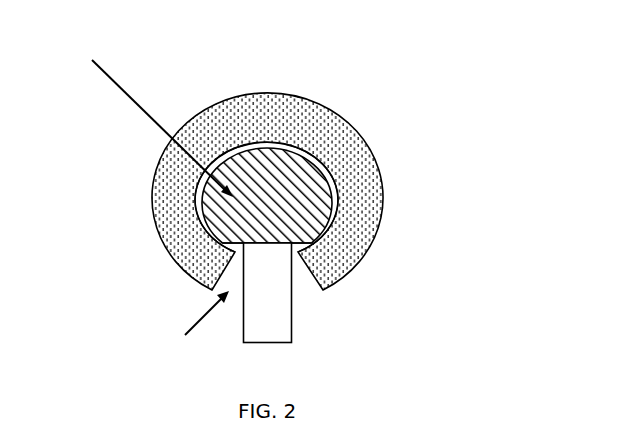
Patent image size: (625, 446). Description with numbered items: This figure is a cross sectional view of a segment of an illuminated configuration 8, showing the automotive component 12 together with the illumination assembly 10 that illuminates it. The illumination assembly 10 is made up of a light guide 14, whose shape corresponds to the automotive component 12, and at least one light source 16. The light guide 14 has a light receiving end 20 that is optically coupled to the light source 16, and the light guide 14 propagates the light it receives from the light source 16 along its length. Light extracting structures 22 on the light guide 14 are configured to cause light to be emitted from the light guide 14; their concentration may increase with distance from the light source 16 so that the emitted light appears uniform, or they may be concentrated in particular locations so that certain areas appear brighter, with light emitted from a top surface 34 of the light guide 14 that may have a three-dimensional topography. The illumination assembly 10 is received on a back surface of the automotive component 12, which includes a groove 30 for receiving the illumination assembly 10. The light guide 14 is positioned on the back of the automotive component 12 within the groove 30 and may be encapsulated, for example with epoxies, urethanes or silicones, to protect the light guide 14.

The illuminated configuration 8 is at (293, 210).
The illumination assembly 10 is at (104, 49).
The automotive component 12 is at (160, 193).
The light guide 14 is at (240, 158).
The light source 16 is at (268, 342).
The light receiving end 20 is at (270, 243).
The light extracting structures 22 is at (270, 147).
The groove 30 is at (201, 329).
The top surface 34 is at (310, 160).